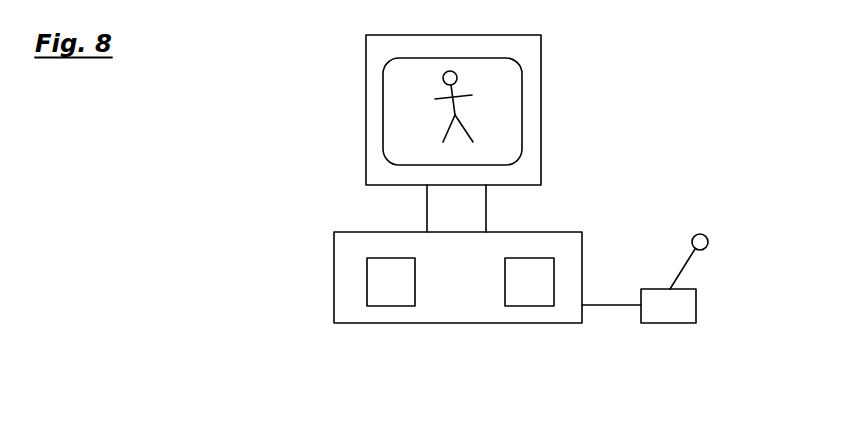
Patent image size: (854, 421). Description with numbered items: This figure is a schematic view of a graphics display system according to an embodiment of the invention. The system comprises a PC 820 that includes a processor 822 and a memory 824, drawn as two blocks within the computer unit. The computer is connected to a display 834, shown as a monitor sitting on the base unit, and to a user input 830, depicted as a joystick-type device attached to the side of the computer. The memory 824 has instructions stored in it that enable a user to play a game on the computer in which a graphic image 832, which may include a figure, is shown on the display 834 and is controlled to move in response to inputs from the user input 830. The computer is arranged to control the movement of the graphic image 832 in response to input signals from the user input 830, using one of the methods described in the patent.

The PC 820 is at (582, 258).
The processor 822 is at (385, 306).
The memory 824 is at (532, 306).
The user input 830 is at (696, 305).
The graphic image 832 is at (505, 85).
The display 834 is at (541, 148).